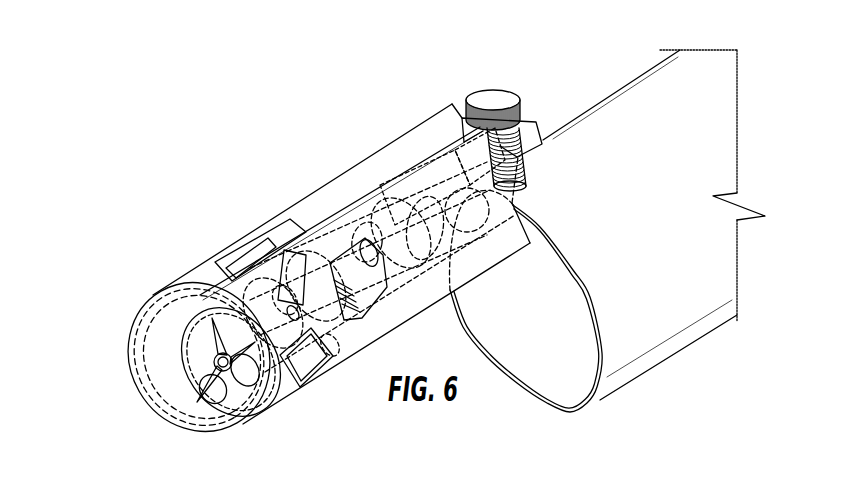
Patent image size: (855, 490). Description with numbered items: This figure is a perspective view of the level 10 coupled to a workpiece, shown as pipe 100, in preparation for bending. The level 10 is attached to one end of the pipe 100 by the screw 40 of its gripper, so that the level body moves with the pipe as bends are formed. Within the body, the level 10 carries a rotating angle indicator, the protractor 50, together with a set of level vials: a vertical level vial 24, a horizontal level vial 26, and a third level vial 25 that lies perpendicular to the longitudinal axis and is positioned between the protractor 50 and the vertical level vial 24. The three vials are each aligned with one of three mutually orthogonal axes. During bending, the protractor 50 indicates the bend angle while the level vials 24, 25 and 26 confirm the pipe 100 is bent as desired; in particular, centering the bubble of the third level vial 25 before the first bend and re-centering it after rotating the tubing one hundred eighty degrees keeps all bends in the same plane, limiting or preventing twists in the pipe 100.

The level 10 is at (374, 126).
The vertical level vial 24 is at (335, 268).
The third level vial 25 is at (278, 305).
The horizontal level vial 26 is at (402, 223).
The screw 40 is at (503, 82).
The protractor 50 is at (205, 366).
The pipe 100 is at (707, 133).